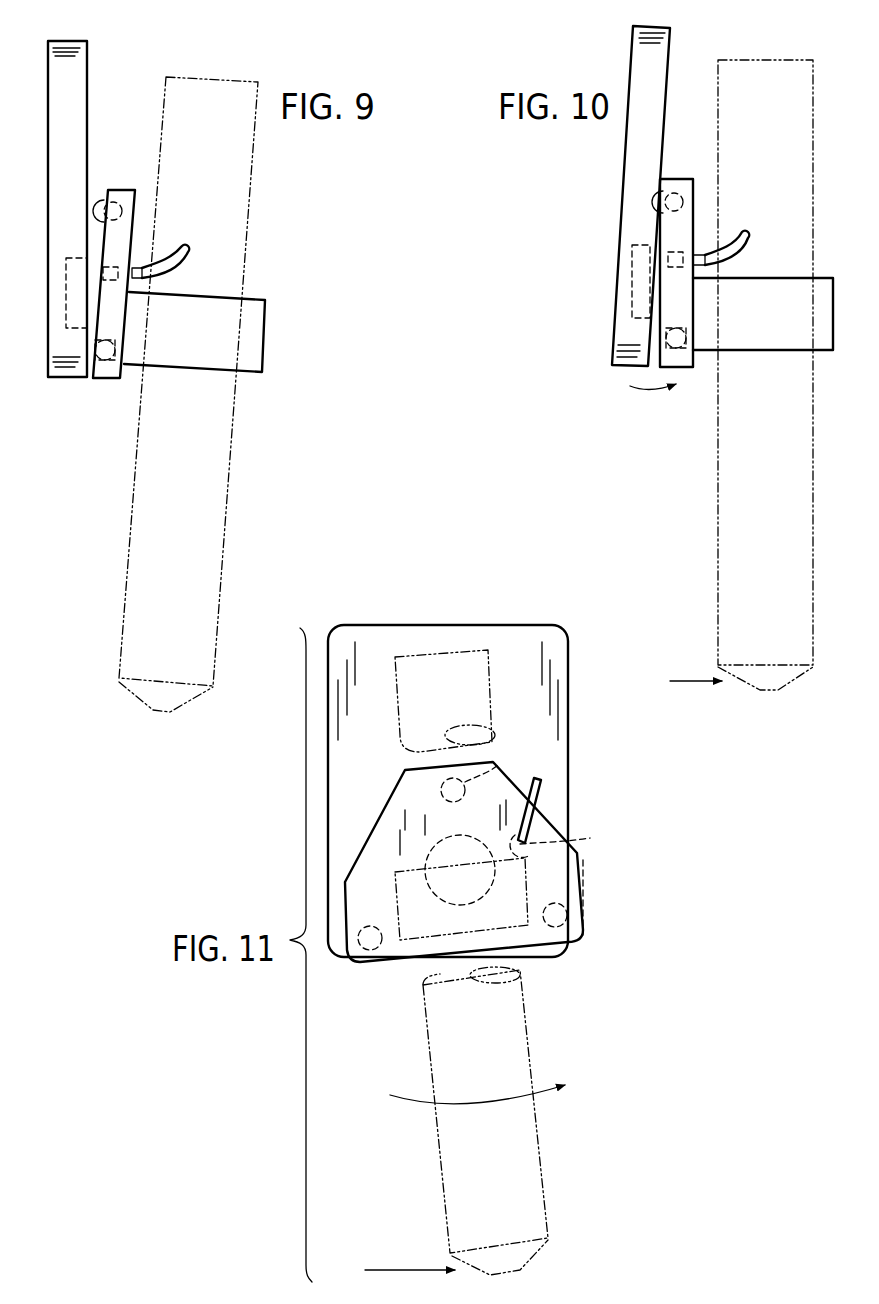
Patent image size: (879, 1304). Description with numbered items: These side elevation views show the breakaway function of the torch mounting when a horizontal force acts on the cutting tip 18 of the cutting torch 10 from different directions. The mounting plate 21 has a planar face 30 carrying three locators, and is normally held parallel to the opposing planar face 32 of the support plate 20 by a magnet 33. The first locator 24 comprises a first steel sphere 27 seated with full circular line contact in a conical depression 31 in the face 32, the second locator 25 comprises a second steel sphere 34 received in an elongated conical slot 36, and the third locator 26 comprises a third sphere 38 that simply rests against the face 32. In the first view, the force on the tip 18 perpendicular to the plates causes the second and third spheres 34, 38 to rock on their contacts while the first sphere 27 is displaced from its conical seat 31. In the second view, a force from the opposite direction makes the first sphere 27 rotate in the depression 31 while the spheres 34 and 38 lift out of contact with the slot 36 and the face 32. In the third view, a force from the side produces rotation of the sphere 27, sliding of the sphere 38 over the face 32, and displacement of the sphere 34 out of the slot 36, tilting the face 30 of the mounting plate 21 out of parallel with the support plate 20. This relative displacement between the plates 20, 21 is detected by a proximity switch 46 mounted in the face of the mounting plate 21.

In FIG. 9, the cutting torch 10 is at (188, 394).
In FIG. 10, the cutting torch 10 is at (735, 478).
In FIG. 11, the cutting torch 10 is at (525, 1145).
In FIG. 10, the cutting tip 18 is at (778, 686).
In FIG. 11, the cutting tip 18 is at (548, 1258).
In FIG. 9, the support plate 20 is at (78, 80).
In FIG. 10, the support plate 20 is at (663, 57).
In FIG. 11, the support plate 20 is at (390, 635).
In FIG. 9, the mounting plate 21 is at (128, 233).
In FIG. 10, the mounting plate 21 is at (690, 218).
In FIG. 11, the mounting plate 21 is at (385, 825).
In FIG. 9, the first locator 24 is at (140, 165).
In FIG. 10, the first locator 24 is at (669, 172).
In FIG. 11, the first locator 24 is at (438, 777).
In FIG. 11, the second locator 25 is at (588, 940).
In FIG. 9, the third locator 26 is at (108, 384).
In FIG. 10, the third locator 26 is at (681, 326).
In FIG. 11, the third locator 26 is at (376, 965).
In FIG. 9, the first steel sphere 27 is at (97, 206).
In FIG. 10, the first steel sphere 27 is at (658, 207).
In FIG. 11, the first steel sphere 27 is at (495, 790).
In FIG. 9, the planar face 30 is at (100, 280).
In FIG. 9, the conical depression 31 is at (80, 213).
In FIG. 9, the planar face 32 is at (95, 244).
In FIG. 9, the magnet 33 is at (75, 300).
In FIG. 11, the magnet 33 is at (428, 848).
In FIG. 11, the second steel sphere 34 is at (588, 915).
In FIG. 11, the elongated conical slot 36 is at (560, 945).
In FIG. 9, the third sphere 38 is at (92, 356).
In FIG. 10, the third sphere 38 is at (661, 342).
In FIG. 11, the third sphere 38 is at (348, 960).
In FIG. 9, the proximity switch 46 is at (140, 262).
In FIG. 10, the proximity switch 46 is at (708, 252).
In FIG. 11, the proximity switch 46 is at (580, 840).